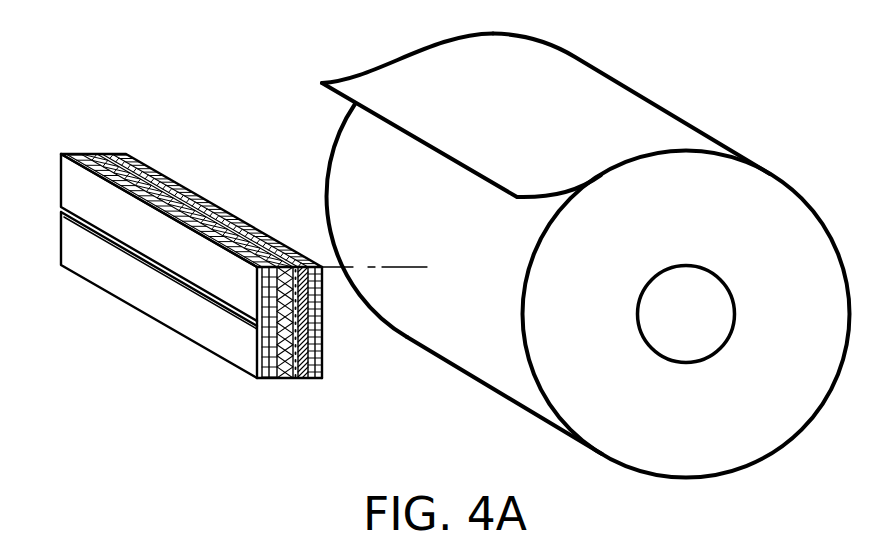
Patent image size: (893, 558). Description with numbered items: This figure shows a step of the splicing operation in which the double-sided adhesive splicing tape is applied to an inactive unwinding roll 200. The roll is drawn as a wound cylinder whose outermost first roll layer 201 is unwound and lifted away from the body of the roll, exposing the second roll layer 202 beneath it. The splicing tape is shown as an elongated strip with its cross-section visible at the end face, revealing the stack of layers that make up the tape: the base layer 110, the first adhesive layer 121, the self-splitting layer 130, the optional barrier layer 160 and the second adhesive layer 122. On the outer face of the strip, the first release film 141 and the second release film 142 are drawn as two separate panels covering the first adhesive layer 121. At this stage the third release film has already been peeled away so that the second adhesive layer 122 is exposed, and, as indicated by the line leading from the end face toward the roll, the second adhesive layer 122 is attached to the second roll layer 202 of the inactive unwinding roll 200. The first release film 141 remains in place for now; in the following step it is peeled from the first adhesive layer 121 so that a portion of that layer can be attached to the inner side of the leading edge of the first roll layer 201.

The inactive unwinding roll 200 is at (728, 443).
The first roll layer 201 is at (600, 100).
The second roll layer 202 is at (355, 142).
The first release film 141 is at (65, 177).
The second release film 142 is at (65, 248).
The first adhesive layer 121 is at (270, 365).
The base layer 110 is at (287, 365).
The self-splitting layer 130 is at (298, 365).
The barrier layer 160 is at (303, 365).
The second adhesive layer 122 is at (312, 352).